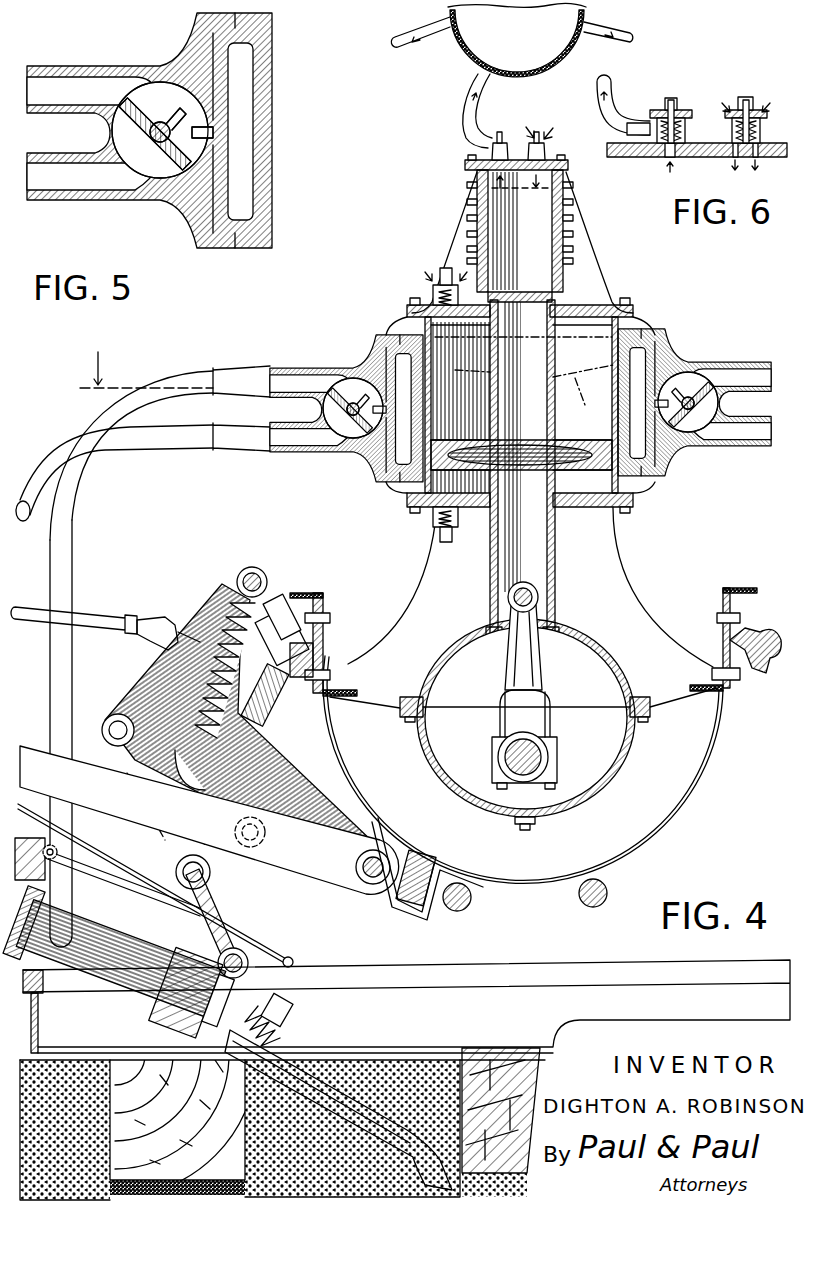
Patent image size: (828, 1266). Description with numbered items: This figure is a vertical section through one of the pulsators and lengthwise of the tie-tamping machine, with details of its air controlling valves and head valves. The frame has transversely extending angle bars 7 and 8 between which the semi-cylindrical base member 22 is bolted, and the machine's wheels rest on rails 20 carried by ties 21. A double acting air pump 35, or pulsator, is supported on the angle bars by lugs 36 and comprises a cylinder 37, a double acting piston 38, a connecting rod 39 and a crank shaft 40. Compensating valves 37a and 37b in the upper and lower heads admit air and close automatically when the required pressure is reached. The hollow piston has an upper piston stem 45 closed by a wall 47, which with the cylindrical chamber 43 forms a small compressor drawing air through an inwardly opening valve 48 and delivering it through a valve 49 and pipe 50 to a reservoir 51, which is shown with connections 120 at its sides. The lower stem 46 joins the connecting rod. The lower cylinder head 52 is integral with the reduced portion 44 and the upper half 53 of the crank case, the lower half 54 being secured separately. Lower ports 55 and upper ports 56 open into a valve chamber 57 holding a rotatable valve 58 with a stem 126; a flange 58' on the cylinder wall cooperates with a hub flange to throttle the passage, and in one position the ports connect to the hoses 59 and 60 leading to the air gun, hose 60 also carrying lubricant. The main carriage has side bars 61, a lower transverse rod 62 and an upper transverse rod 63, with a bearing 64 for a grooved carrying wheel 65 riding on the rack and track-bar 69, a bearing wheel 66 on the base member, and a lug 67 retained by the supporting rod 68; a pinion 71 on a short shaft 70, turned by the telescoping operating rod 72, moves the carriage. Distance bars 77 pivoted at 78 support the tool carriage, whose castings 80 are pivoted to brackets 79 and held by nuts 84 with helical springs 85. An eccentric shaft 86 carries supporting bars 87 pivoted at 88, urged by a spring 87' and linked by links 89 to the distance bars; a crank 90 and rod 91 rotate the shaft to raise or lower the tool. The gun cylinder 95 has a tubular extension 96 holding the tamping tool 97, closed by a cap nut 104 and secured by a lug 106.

In FIG. 4, the transversely extending angle bar 7 is at (688, 718).
In FIG. 4, the transversely extending angle bar 8 is at (326, 600).
In FIG. 4, the rail 20 is at (545, 962).
In FIG. 4, the tie 21 is at (462, 1082).
In FIG. 4, the base member 22 is at (722, 768).
In FIG. 4, the double acting air pump 35 is at (618, 536).
In FIG. 4, the lug 36 is at (345, 667).
In FIG. 5, the cylinder 37 is at (266, 78).
In FIG. 4, the cylinder 37 is at (630, 425).
In FIG. 4, the compensating valve 37a is at (432, 280).
In FIG. 4, the compensating valve 37b is at (447, 545).
In FIG. 4, the double acting piston 38 is at (575, 440).
In FIG. 4, the connecting rod 39 is at (540, 668).
In FIG. 4, the crank shaft 40 is at (542, 754).
In FIG. 4, the cylindrical chamber 43 is at (543, 201).
In FIG. 4, the reduced portion 44 is at (578, 565).
In FIG. 4, the upper piston stem 45 is at (553, 353).
In FIG. 4, the lower piston stem 46 is at (557, 582).
In FIG. 4, the wall 47 is at (524, 291).
In FIG. 6, the inwardly opening valve 48 is at (746, 97).
In FIG. 4, the inwardly opening valve 48 is at (538, 131).
In FIG. 6, the valve 49 is at (672, 98).
In FIG. 4, the valve 49 is at (499, 132).
In FIG. 6, the pipe 50 is at (612, 96).
In FIG. 4, the pipe 50 is at (463, 113).
In FIG. 4, the reservoir 51 is at (472, 54).
In FIG. 4, the lower cylinder head 52 is at (595, 508).
In FIG. 4, the upper half of the crank case 53 is at (603, 632).
In FIG. 4, the lower half of the crank case 54 is at (606, 782).
In FIG. 5, the lower port 55 is at (262, 240).
In FIG. 4, the lower port 55 is at (385, 480).
In FIG. 5, the upper port 56 is at (262, 19).
In FIG. 4, the upper port 56 is at (400, 340).
In FIG. 5, the valve chamber 57 is at (167, 170).
In FIG. 4, the valve chamber 57 is at (352, 424).
In FIG. 5, the rotatable valve 58 is at (118, 186).
In FIG. 4, the rotatable valve 58 is at (517, 376).
In FIG. 5, the flange 58' is at (168, 72).
In FIG. 4, the flange 58' is at (533, 345).
In FIG. 4, the hose 59 is at (185, 362).
In FIG. 4, the hose 60 is at (47, 472).
In FIG. 4, the side bar 61 is at (172, 672).
In FIG. 4, the lower transverse rod 62 is at (372, 878).
In FIG. 4, the upper transverse rod 63 is at (254, 567).
In FIG. 4, the bearing 64 is at (262, 606).
In FIG. 4, the grooved carrying wheel 65 is at (296, 630).
In FIG. 4, the bearing wheel 66 is at (413, 905).
In FIG. 4, the lug 67 is at (484, 890).
In FIG. 4, the transverse supporting rod 68 is at (455, 912).
In FIG. 4, the rack and track-bar 69 is at (302, 662).
In FIG. 4, the short shaft 70 is at (182, 632).
In FIG. 4, the pinion 71 is at (268, 716).
In FIG. 4, the telescoping operating rod 72 is at (86, 612).
In FIG. 4, the distance bar 77 is at (322, 870).
In FIG. 4, the pivot 78 is at (360, 880).
In FIG. 4, the bracket 79 is at (32, 852).
In FIG. 4, the casting 80 is at (106, 882).
In FIG. 4, the nut 84 is at (286, 1006).
In FIG. 4, the helical spring 85 is at (278, 1034).
In FIG. 4, the eccentric shaft 86 is at (250, 956).
In FIG. 4, the supporting bar 87 is at (228, 917).
In FIG. 4, the spring 87' is at (147, 747).
In FIG. 4, the pivot 88 is at (116, 720).
In FIG. 4, the link 89 is at (214, 876).
In FIG. 4, the crank 90 is at (270, 966).
In FIG. 4, the rod 91 is at (86, 852).
In FIG. 4, the cylinder 95 is at (40, 945).
In FIG. 4, the tubular extension 96 is at (128, 1000).
In FIG. 4, the tamping tool 97 is at (352, 1100).
In FIG. 4, the cap nut 104 is at (222, 1032).
In FIG. 4, the lug 106 is at (176, 1010).
In FIG. 4, the tube 120 is at (440, 21).
In FIG. 5, the rotatable stem 126 is at (152, 134).
In FIG. 4, the rotatable stem 126 is at (345, 420).